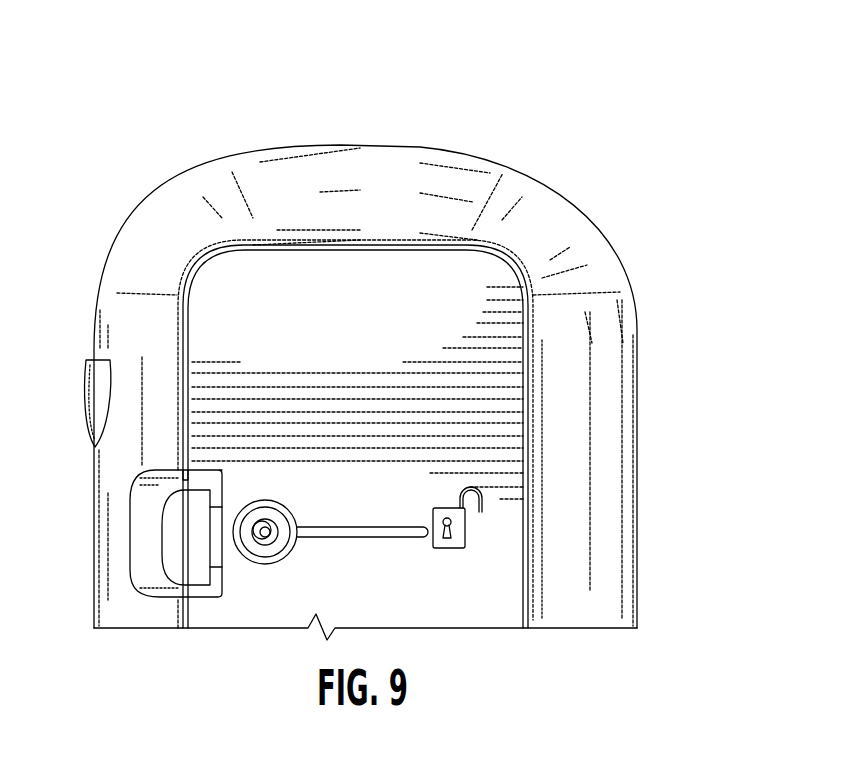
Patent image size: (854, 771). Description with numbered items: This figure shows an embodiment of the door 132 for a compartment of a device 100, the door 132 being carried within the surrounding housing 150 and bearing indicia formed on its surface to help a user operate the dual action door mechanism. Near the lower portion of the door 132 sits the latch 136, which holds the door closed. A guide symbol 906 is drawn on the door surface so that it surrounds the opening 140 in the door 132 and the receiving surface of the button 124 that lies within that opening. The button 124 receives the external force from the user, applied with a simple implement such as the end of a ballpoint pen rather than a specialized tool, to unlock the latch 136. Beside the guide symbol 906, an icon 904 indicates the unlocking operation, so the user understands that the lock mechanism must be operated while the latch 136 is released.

The storage device 100 is at (123, 143).
The housing 150 is at (600, 224).
The door 132 is at (402, 306).
The latch 136 is at (182, 516).
The guide symbol 906 is at (278, 511).
The button 124 is at (278, 543).
The opening 140 is at (255, 545).
The icon 904 is at (445, 508).